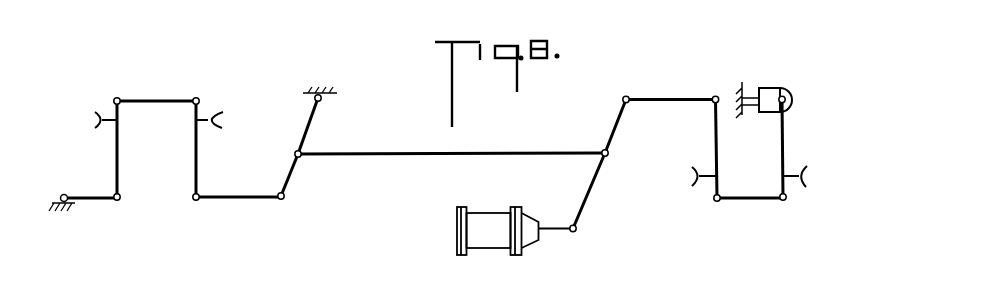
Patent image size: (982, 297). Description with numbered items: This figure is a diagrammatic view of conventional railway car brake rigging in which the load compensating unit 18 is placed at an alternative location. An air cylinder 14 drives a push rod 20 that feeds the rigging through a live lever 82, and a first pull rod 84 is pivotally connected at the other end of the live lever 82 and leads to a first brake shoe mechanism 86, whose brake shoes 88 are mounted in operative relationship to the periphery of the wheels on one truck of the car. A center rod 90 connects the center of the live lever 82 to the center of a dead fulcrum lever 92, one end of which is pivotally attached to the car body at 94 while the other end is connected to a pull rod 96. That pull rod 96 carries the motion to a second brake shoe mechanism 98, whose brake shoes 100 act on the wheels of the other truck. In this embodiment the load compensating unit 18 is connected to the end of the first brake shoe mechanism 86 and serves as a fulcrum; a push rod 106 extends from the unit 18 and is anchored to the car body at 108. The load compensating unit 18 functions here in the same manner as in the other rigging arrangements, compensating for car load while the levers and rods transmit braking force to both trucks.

The air cylinder 14 is at (491, 216).
The load compensating unit 18 is at (778, 88).
The push rod 20 is at (551, 232).
The live lever 82 is at (598, 182).
The first pull rod 84 is at (672, 97).
The first brake shoe mechanism 86 is at (813, 62).
The brake shoes 88 is at (691, 177).
The center rod 90 is at (413, 151).
The dead fulcrum lever 92 is at (306, 132).
The pivotal attachment to car body 94 is at (323, 100).
The pull rod 96 is at (235, 198).
The second brake shoe mechanism 98 is at (130, 86).
The brake shoes 100 is at (95, 127).
The push rod 106 is at (756, 88).
The anchor on car body 108 is at (733, 88).